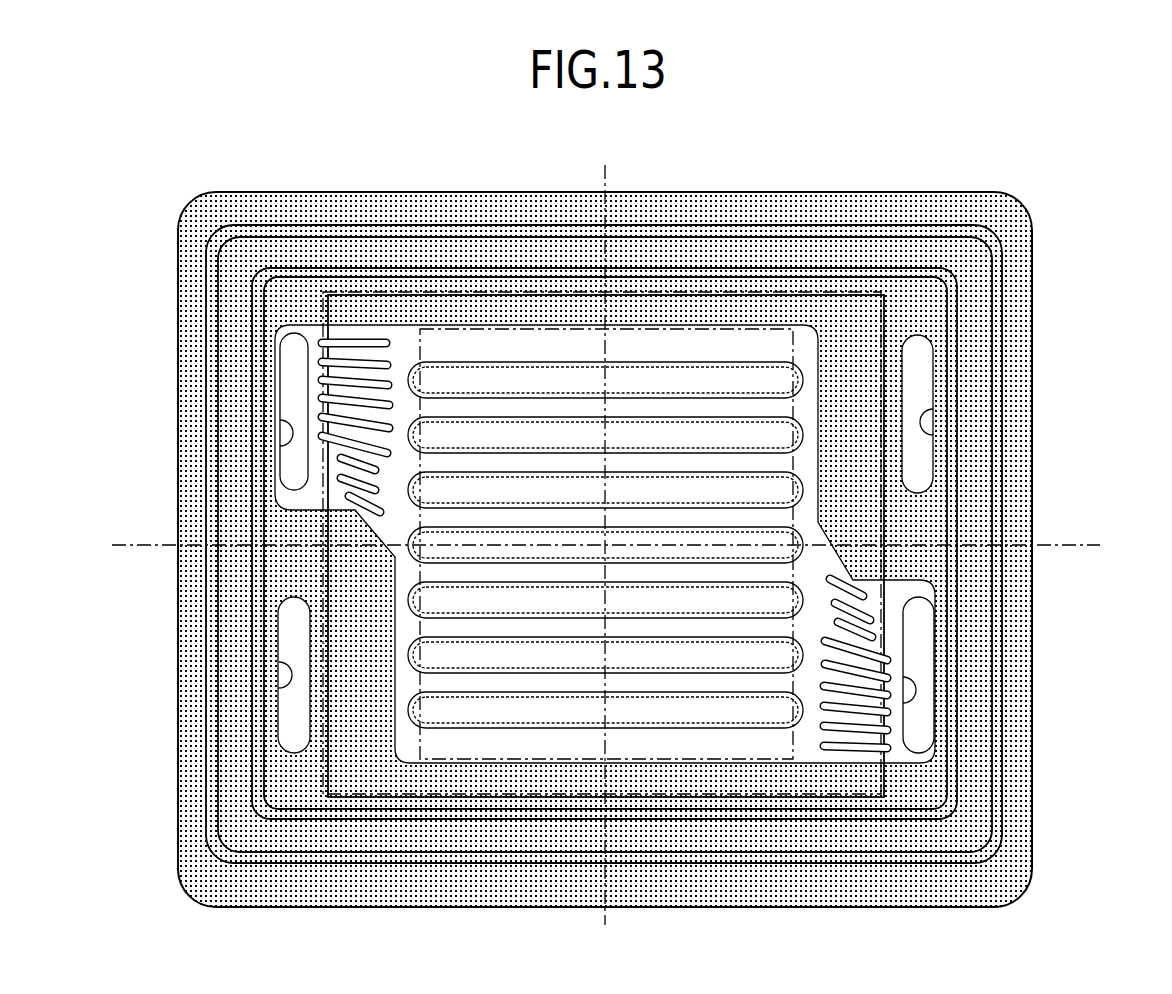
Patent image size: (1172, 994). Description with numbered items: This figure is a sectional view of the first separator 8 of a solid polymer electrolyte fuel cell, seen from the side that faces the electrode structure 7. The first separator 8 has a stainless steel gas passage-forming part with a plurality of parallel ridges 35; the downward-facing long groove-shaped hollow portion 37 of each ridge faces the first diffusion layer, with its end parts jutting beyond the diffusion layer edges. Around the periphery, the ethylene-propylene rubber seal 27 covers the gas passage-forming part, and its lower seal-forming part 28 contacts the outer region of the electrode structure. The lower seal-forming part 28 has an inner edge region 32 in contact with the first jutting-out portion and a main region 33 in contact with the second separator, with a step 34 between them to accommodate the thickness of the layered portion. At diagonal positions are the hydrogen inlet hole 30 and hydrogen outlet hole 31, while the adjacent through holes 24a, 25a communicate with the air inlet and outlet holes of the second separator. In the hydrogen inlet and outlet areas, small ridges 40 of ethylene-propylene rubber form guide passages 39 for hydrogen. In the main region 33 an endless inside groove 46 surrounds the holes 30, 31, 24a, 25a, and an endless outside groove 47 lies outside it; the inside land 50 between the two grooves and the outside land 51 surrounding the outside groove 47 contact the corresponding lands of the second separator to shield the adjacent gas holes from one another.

The electrode structure 7 is at (745, 288).
The first separator 8 is at (1034, 205).
The through hole 24a is at (296, 688).
The through hole 25a is at (933, 436).
The seal 27 is at (1018, 348).
The lower seal-forming part 28 is at (1010, 275).
The hydrogen inlet hole 30 is at (295, 448).
The hydrogen outlet hole 31 is at (918, 703).
The inner edge region 32 is at (373, 666).
The main region 33 is at (228, 602).
The step 34 is at (885, 306).
The ridges 35 is at (624, 383).
The long groove-shaped hollow portion 37 is at (478, 432).
The guide passages 39 is at (370, 353).
The small ridges 40 is at (325, 362).
The endless inside groove 46 is at (492, 270).
The endless outside groove 47 is at (306, 231).
The inside land 50 is at (557, 243).
The outside land 51 is at (410, 203).